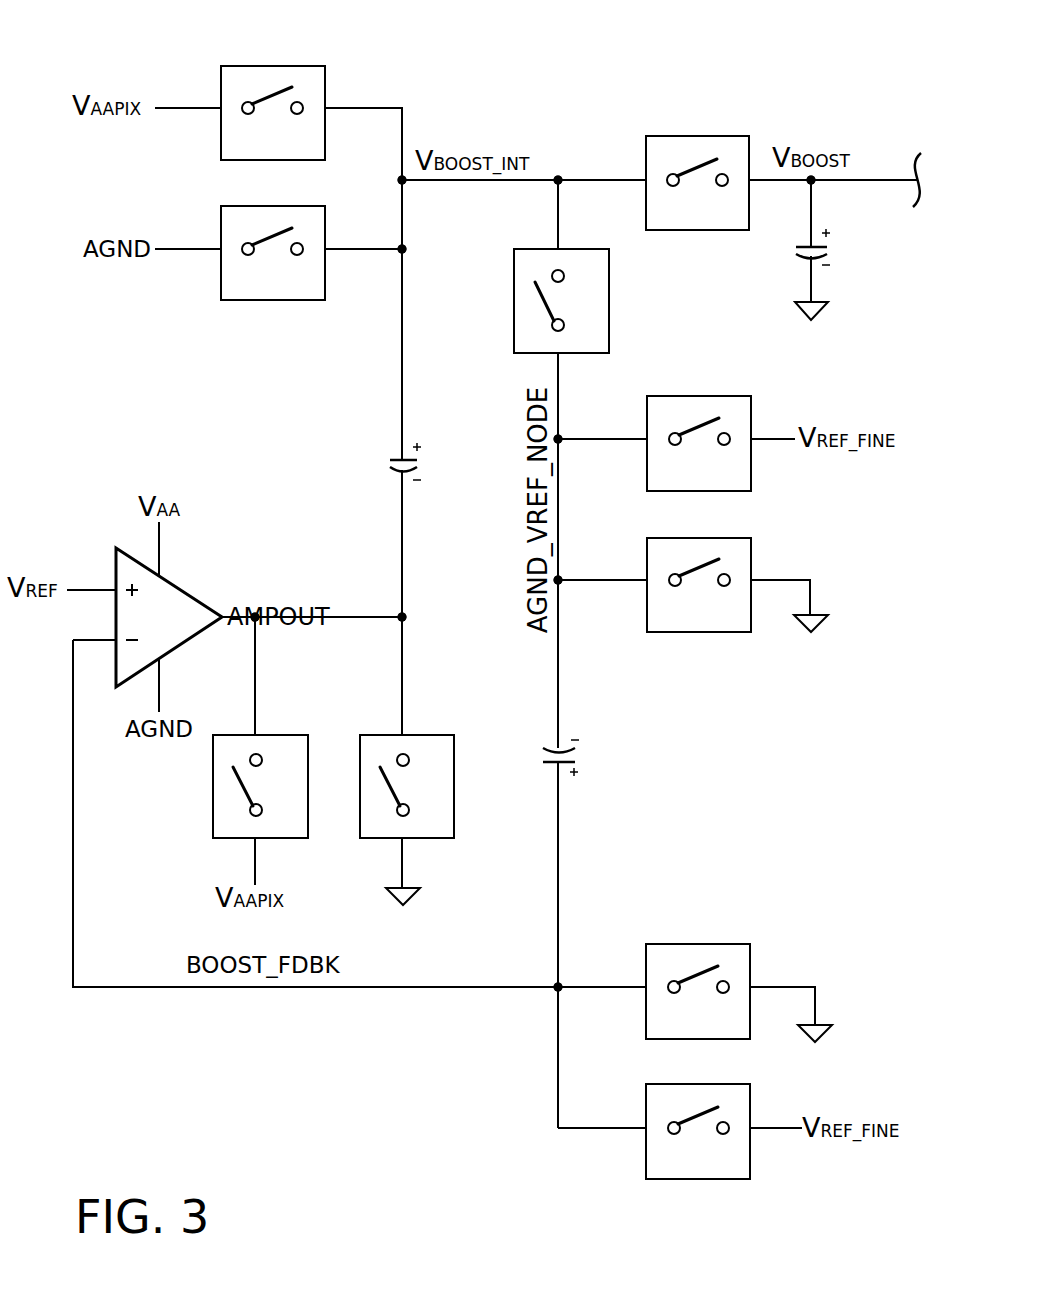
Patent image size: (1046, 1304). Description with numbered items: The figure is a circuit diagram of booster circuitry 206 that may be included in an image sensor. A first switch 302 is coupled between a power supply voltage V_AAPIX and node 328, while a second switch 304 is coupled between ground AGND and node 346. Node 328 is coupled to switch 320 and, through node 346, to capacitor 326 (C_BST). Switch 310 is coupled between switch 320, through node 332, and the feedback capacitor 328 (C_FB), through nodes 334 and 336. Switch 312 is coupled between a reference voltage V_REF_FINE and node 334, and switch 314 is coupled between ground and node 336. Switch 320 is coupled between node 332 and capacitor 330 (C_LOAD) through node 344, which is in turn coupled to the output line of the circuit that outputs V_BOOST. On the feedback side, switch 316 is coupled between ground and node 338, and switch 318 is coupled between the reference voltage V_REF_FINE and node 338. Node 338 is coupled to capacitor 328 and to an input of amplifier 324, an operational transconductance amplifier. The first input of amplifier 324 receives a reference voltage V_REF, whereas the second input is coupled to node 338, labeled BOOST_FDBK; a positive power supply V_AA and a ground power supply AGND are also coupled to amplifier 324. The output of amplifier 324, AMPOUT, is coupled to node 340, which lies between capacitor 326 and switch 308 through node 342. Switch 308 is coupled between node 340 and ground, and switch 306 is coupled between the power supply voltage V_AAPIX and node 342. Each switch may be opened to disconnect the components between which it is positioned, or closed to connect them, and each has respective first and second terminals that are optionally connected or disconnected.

The booster circuitry 206 is at (798, 48).
The first switch 302 is at (272, 66).
The second switch 304 is at (272, 300).
The switch 306 is at (213, 795).
The switch 308 is at (454, 795).
The switch 310 is at (609, 317).
The switch 312 is at (697, 396).
The switch 314 is at (697, 632).
The switch 316 is at (697, 944).
The switch 318 is at (697, 1179).
The switch 320 is at (693, 136).
The amplifier 324 is at (187, 590).
The capacitor 326 is at (372, 435).
The node / capacitor 328 is at (403, 180).
The capacitor 330 is at (866, 289).
The node 332 is at (558, 180).
The node 334 is at (558, 439).
The node 336 is at (558, 580).
The node 338 is at (560, 983).
The node 340 is at (406, 620).
The node 342 is at (260, 622).
The node 344 is at (811, 180).
The node 346 is at (403, 249).